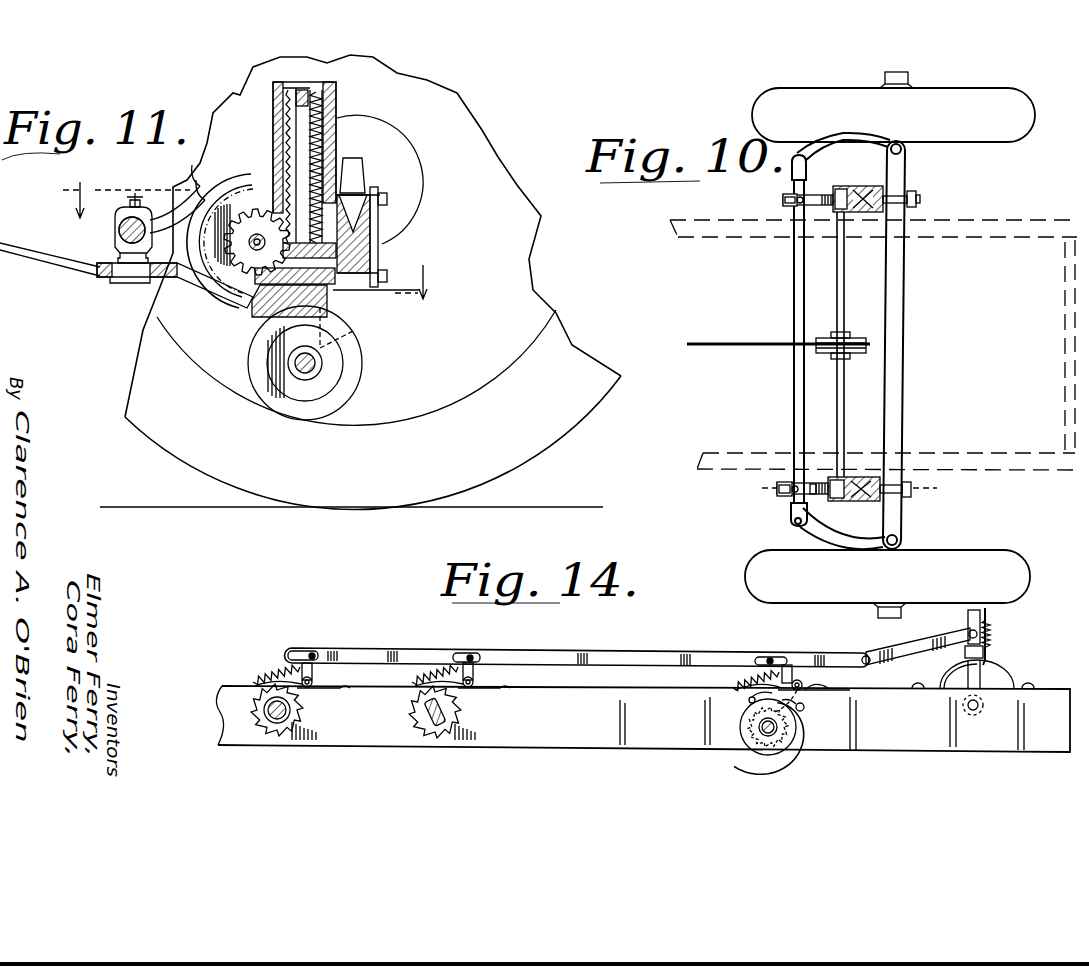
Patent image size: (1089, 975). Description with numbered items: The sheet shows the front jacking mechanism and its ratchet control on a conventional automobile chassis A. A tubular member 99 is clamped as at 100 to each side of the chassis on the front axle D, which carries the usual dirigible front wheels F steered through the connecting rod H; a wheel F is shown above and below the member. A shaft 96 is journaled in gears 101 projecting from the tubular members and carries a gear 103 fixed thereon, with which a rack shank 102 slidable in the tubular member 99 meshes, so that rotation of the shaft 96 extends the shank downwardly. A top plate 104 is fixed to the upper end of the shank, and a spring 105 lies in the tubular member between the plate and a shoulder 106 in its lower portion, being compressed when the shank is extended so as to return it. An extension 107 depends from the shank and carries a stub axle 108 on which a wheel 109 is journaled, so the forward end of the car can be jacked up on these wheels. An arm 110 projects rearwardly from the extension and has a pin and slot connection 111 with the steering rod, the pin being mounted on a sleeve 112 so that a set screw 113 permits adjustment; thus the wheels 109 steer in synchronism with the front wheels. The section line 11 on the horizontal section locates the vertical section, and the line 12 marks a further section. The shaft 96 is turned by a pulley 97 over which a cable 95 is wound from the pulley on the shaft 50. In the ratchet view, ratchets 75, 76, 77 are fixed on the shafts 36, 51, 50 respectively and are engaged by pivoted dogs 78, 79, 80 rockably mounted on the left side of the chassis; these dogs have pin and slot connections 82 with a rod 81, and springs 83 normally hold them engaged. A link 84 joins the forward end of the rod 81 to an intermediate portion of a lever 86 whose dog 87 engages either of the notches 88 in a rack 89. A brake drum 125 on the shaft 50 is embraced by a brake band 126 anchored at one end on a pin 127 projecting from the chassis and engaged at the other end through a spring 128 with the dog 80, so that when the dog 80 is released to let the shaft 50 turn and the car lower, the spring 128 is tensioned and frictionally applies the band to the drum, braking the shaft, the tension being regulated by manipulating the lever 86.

In FIG. 10, the section line 11— 11 is at (856, 486).
In FIG. 11, the section line 12- 12 is at (254, 242).
In FIG. 14, the shaft 36 is at (276, 722).
In FIG. 14, the shaft 50 is at (760, 740).
In FIG. 14, the shaft 51 is at (430, 733).
In FIG. 14, the ratchet 75 is at (254, 685).
In FIG. 14, the ratchet 76 is at (414, 705).
In FIG. 14, the ratchet 77 is at (795, 724).
In FIG. 14, the pivoted dog 78 is at (312, 672).
In FIG. 14, the pivoted dog 79 is at (495, 667).
In FIG. 14, the pivoted dog 80 is at (784, 678).
In FIG. 14, the rod 81 is at (607, 652).
In FIG. 14, the pin and slot connection 82 is at (310, 652).
In FIG. 14, the spring 83 is at (745, 686).
In FIG. 14, the link 84 is at (904, 648).
In FIG. 14, the lever 86 is at (988, 627).
In FIG. 14, the dog 87 is at (988, 655).
In FIG. 14, the notches 88 is at (1000, 665).
In FIG. 14, the rack 89 is at (1005, 682).
In FIG. 10, the cable 95 is at (760, 342).
In FIG. 11, the shaft 96 is at (257, 230).
In FIG. 10, the shaft 96 is at (845, 264).
In FIG. 10, the pulley 97 is at (818, 355).
In FIG. 11, the tubular member 99 is at (333, 108).
In FIG. 10, the tubular member 99 is at (866, 190).
In FIG. 11, the clamp 100 is at (378, 222).
In FIG. 11, the gears 101 is at (203, 205).
In FIG. 11, the rack shank 102 is at (303, 105).
In FIG. 11, the gear 103 is at (224, 207).
In FIG. 10, the gear 103 is at (826, 211).
In FIG. 11, the top plate 104 is at (375, 62).
In FIG. 11, the spring 105 is at (300, 110).
In FIG. 11, the shoulder 106 is at (318, 248).
In FIG. 11, the extension 107 is at (340, 342).
In FIG. 11, the stub axle 108 is at (313, 372).
In FIG. 11, the wheel 109 is at (343, 357).
In FIG. 11, the arm 110 is at (205, 295).
In FIG. 10, the arm 110 is at (792, 508).
In FIG. 11, the pin and slot connection 111 is at (122, 283).
In FIG. 11, the sleeve 112 is at (143, 210).
In FIG. 11, the set screw 113 is at (134, 193).
In FIG. 10, the set screw 113 is at (797, 208).
In FIG. 14, the brake drum 125 is at (828, 690).
In FIG. 14, the brake band 126 is at (785, 758).
In FIG. 14, the pin 127 is at (806, 707).
In FIG. 14, the spring 128 is at (748, 701).
In FIG. 10, the automobile chassis A is at (726, 221).
In FIG. 14, the automobile chassis A is at (657, 732).
In FIG. 11, the front axle D is at (398, 247).
In FIG. 10, the front axle D is at (900, 266).
In FIG. 10, the dirigible front wheels F is at (968, 100).
In FIG. 11, the connecting rod H is at (115, 231).
In FIG. 10, the tire I is at (963, 558).